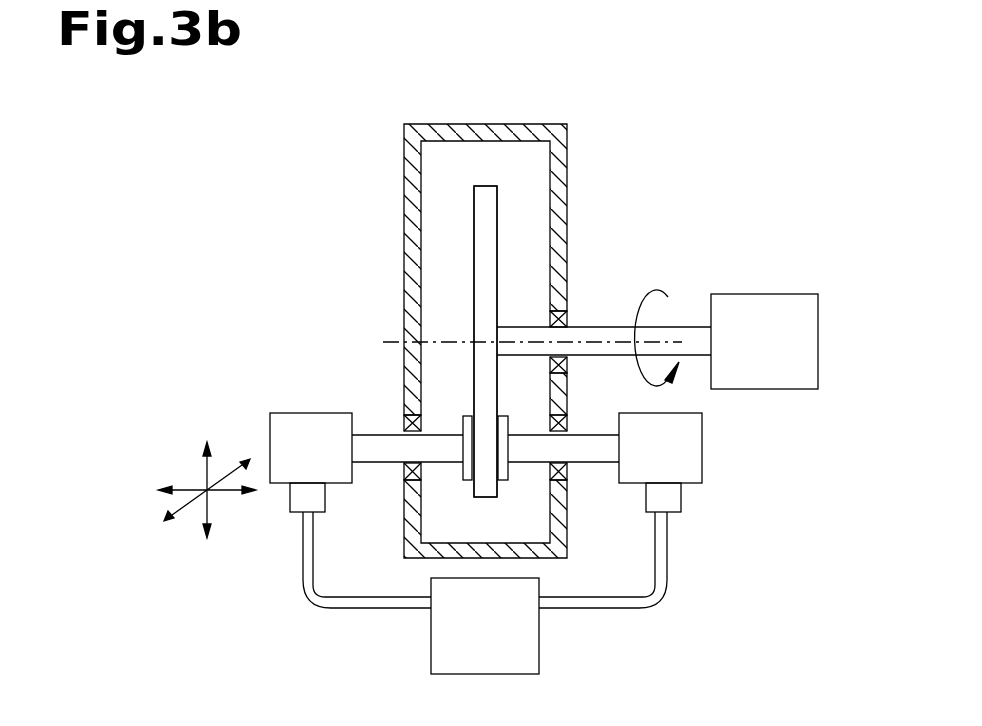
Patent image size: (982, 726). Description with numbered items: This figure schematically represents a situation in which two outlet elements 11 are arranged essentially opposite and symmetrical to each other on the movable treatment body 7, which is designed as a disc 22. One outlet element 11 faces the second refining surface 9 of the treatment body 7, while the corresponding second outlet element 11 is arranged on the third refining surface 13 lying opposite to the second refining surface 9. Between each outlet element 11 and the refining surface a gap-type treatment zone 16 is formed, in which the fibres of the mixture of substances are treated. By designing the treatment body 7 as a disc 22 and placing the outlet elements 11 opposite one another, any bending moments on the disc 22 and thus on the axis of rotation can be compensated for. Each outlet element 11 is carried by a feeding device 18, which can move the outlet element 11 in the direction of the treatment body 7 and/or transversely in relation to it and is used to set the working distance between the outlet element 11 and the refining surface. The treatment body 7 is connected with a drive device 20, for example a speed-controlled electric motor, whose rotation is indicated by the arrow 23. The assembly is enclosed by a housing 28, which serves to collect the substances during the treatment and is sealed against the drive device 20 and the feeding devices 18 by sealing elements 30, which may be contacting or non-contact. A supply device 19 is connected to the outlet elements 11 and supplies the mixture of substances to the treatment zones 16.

The housing 28 is at (563, 142).
The sealing element 30 is at (560, 320).
The movable treatment body 7 is at (487, 210).
The disc 22 is at (485, 341).
The second refining surface 9 is at (473, 293).
The third refining surface 13 is at (500, 252).
The rotation direction 23 is at (665, 298).
The drive device 20 is at (750, 357).
The feeding device 18 is at (298, 462).
The outlet element 11 is at (570, 450).
The treatment zone 16 is at (500, 490).
The supply device 19 is at (472, 639).